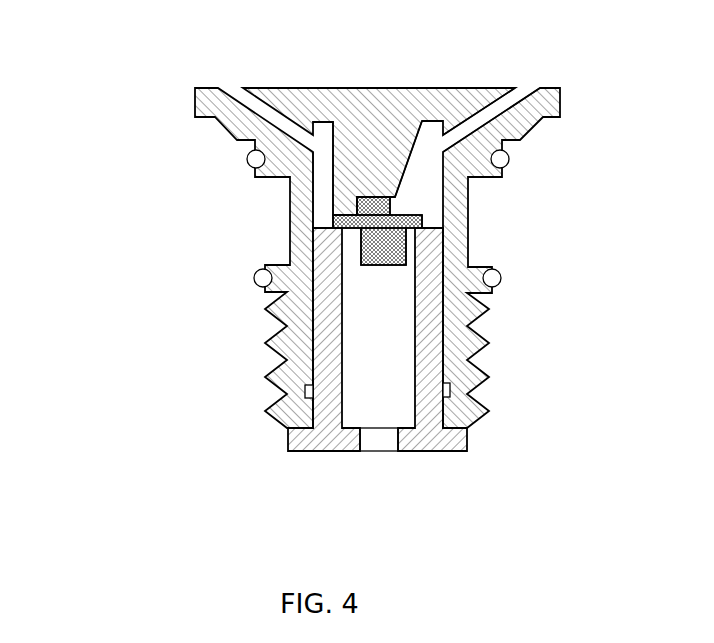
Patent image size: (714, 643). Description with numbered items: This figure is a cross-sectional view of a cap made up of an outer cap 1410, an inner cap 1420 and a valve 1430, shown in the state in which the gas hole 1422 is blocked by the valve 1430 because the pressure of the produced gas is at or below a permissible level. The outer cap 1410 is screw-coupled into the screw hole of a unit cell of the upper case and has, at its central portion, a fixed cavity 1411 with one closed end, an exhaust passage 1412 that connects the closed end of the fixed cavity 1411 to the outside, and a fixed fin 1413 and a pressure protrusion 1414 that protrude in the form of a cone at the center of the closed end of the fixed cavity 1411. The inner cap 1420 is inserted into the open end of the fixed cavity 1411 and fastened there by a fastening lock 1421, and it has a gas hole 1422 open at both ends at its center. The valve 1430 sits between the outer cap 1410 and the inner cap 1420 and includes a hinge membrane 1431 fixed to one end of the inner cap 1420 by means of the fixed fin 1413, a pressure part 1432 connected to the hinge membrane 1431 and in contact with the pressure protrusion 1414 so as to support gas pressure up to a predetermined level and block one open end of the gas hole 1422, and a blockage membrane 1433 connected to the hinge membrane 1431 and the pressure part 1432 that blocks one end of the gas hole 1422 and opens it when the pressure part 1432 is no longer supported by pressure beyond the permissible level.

The outer cap 1410 is at (165, 103).
The fixed cavity 1411 is at (318, 157).
The exhaust passage 1412 is at (523, 88).
The fixed fin 1413 is at (334, 213).
The pressure protrusion 1414 is at (363, 197).
The inner cap 1420 is at (318, 462).
The fastening lock 1421 is at (305, 389).
The gas hole 1422 is at (412, 403).
The valve 1430 is at (409, 281).
The hinge membrane 1431 is at (334, 221).
The pressure part 1432 is at (391, 205).
The blockage membrane 1433 is at (421, 222).